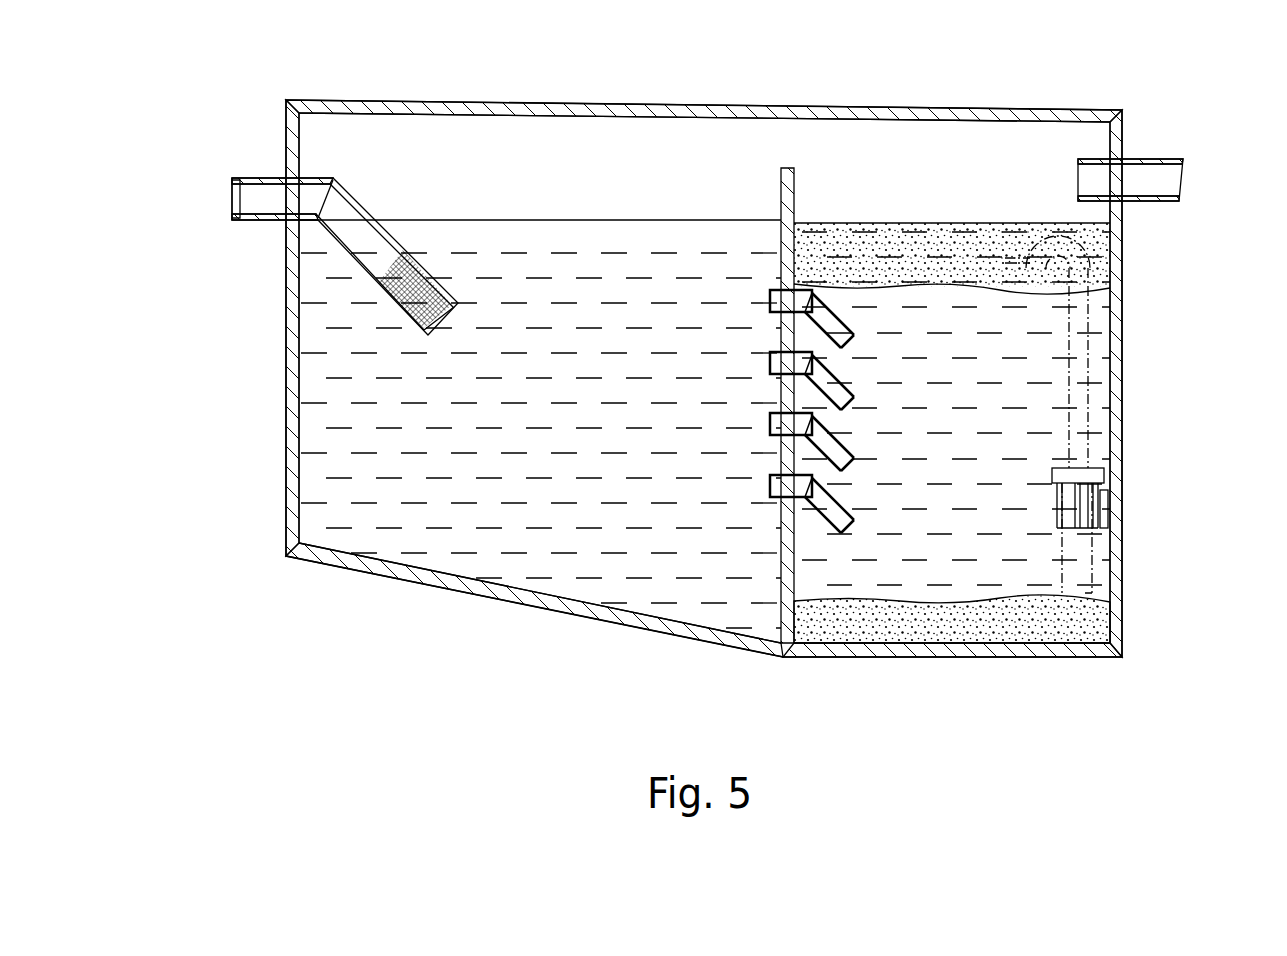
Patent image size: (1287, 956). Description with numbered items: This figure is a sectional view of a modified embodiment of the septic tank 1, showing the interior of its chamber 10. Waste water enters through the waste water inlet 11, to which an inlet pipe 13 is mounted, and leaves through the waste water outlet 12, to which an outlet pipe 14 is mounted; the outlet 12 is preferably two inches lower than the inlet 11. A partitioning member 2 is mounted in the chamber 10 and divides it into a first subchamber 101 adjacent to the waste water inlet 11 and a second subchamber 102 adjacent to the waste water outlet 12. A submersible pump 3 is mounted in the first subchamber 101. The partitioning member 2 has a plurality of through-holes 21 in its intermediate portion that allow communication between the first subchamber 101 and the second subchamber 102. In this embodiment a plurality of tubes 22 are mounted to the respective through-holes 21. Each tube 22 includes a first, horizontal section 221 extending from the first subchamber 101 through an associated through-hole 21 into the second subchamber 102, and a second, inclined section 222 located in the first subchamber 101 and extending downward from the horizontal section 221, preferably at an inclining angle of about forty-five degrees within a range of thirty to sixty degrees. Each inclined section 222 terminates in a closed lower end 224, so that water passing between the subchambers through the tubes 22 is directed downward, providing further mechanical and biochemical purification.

The water treatment tank apparatus 1 is at (1154, 684).
The chamber 10 is at (706, 148).
The first subchamber 101 is at (897, 622).
The second subchamber 102 is at (586, 572).
The waste water inlet 11 is at (1122, 204).
The waste water outlet 12 is at (287, 222).
The inlet pipe 13 is at (1168, 160).
The outlet pipe 14 is at (240, 178).
The partitioning member 2 is at (790, 565).
The through-holes 21 is at (772, 290).
The tubes 22 is at (1010, 288).
The first horizontal section 221 is at (808, 290).
The second inclined section 222 is at (830, 311).
The closed lower end 224 is at (852, 338).
The submersible pump 3 is at (1085, 548).